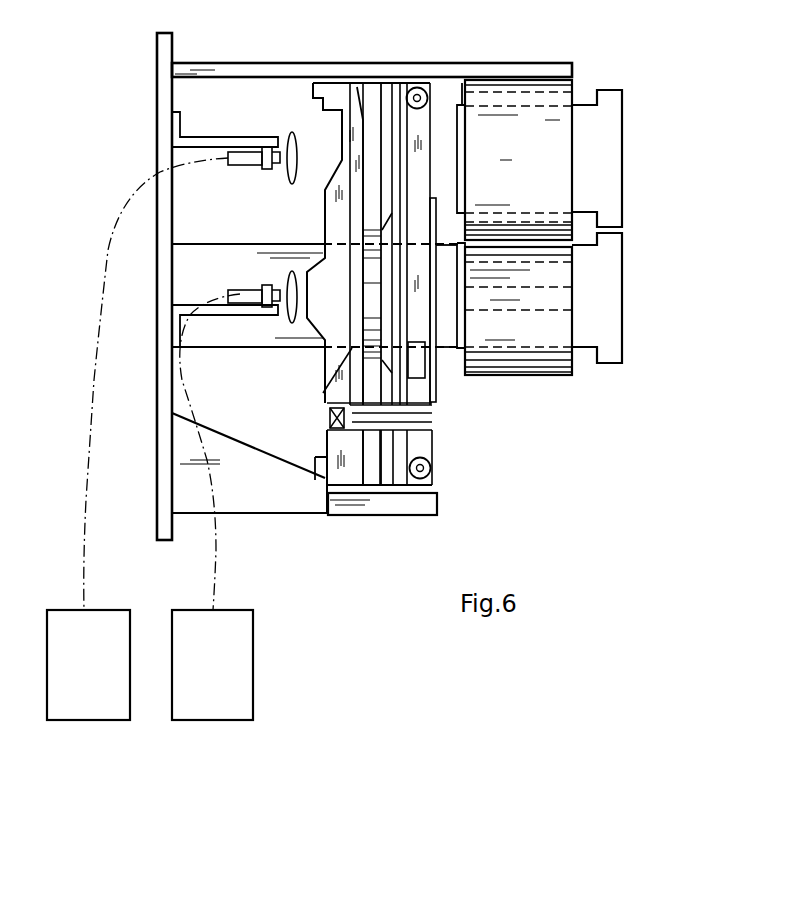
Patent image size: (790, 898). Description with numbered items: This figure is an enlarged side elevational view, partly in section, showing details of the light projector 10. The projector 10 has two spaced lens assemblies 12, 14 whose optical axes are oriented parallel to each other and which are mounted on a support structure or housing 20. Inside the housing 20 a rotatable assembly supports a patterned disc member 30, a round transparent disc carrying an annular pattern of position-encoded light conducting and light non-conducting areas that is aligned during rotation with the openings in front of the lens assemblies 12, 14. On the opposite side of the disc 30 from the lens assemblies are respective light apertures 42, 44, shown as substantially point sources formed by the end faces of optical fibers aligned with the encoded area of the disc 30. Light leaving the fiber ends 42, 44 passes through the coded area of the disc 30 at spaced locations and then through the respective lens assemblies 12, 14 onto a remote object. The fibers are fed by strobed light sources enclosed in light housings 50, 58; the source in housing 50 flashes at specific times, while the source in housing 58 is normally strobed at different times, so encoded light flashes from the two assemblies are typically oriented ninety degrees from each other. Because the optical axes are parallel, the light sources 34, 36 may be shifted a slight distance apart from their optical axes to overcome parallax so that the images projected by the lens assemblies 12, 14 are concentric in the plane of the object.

The light projector 10 is at (528, 33).
The lens assembly 12 is at (611, 88).
The lens assembly 14 is at (612, 366).
The housing 20 is at (334, 517).
The patterned disc member 30 is at (380, 106).
The light source 34 is at (246, 165).
The light source 36 is at (240, 291).
The light aperture 42 is at (290, 136).
The light aperture 44 is at (290, 285).
The light housing 50 is at (78, 724).
The light housing 58 is at (228, 724).